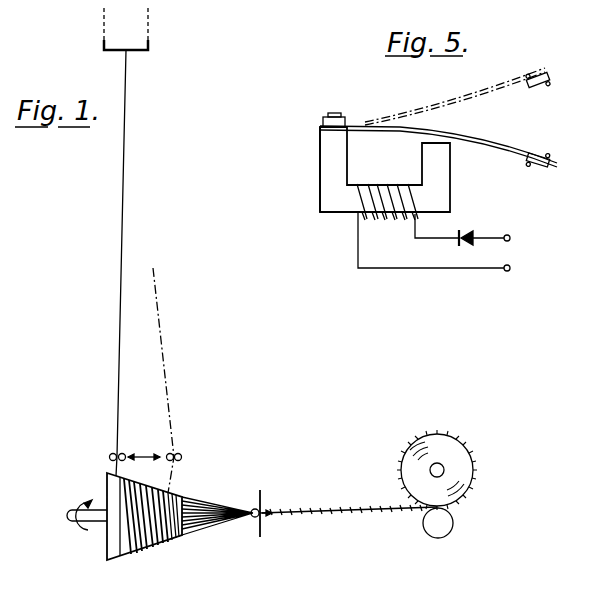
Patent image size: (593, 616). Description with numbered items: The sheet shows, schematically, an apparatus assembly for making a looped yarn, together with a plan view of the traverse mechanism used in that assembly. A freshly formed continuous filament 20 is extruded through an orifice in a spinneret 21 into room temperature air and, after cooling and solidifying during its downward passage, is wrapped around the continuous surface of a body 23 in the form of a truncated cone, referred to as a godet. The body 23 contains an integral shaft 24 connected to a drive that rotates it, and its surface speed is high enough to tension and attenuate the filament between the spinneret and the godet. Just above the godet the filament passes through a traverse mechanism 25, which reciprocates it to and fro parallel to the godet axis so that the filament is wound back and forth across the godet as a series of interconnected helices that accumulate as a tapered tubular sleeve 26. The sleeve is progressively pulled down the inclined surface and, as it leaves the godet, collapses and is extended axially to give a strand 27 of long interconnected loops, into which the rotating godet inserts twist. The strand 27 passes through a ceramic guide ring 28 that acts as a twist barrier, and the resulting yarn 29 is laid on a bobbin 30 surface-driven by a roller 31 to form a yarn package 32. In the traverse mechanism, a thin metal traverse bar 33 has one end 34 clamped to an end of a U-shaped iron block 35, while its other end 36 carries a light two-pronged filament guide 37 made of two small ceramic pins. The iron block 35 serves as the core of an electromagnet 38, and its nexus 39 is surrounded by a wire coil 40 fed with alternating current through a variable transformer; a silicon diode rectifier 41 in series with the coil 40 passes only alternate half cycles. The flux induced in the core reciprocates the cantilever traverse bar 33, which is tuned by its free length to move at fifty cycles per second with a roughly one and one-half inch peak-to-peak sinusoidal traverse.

In FIG. 1, the continuous filament 20 is at (126, 125).
In FIG. 1, the spinneret 21 is at (103, 40).
In FIG. 1, the body (godet) 23 is at (113, 558).
In FIG. 1, the integral shaft 24 is at (90, 523).
In FIG. 1, the traverse mechanism 25 is at (182, 454).
In FIG. 1, the tapered tubular sleeve 26 is at (145, 548).
In FIG. 1, the strand 27 is at (212, 503).
In FIG. 1, the ceramic guide ring 28 is at (262, 500).
In FIG. 1, the yarn 29 is at (308, 510).
In FIG. 1, the bobbin 30 is at (445, 467).
In FIG. 1, the roller 31 is at (450, 526).
In FIG. 1, the yarn package 32 is at (440, 440).
In FIG. 5, the traverse bar 33 is at (368, 125).
In FIG. 5, the end of traverse bar 34 is at (335, 117).
In FIG. 5, the U-shaped iron block 35 is at (320, 163).
In FIG. 5, the other end of traverse bar 36 is at (493, 148).
In FIG. 5, the two-pronged filament guide 37 is at (547, 155).
In FIG. 5, the electromagnet 38 is at (340, 215).
In FIG. 5, the nexus of iron block 39 is at (392, 210).
In FIG. 5, the coil 40 is at (403, 181).
In FIG. 5, the silicon diode rectifier 41 is at (471, 234).